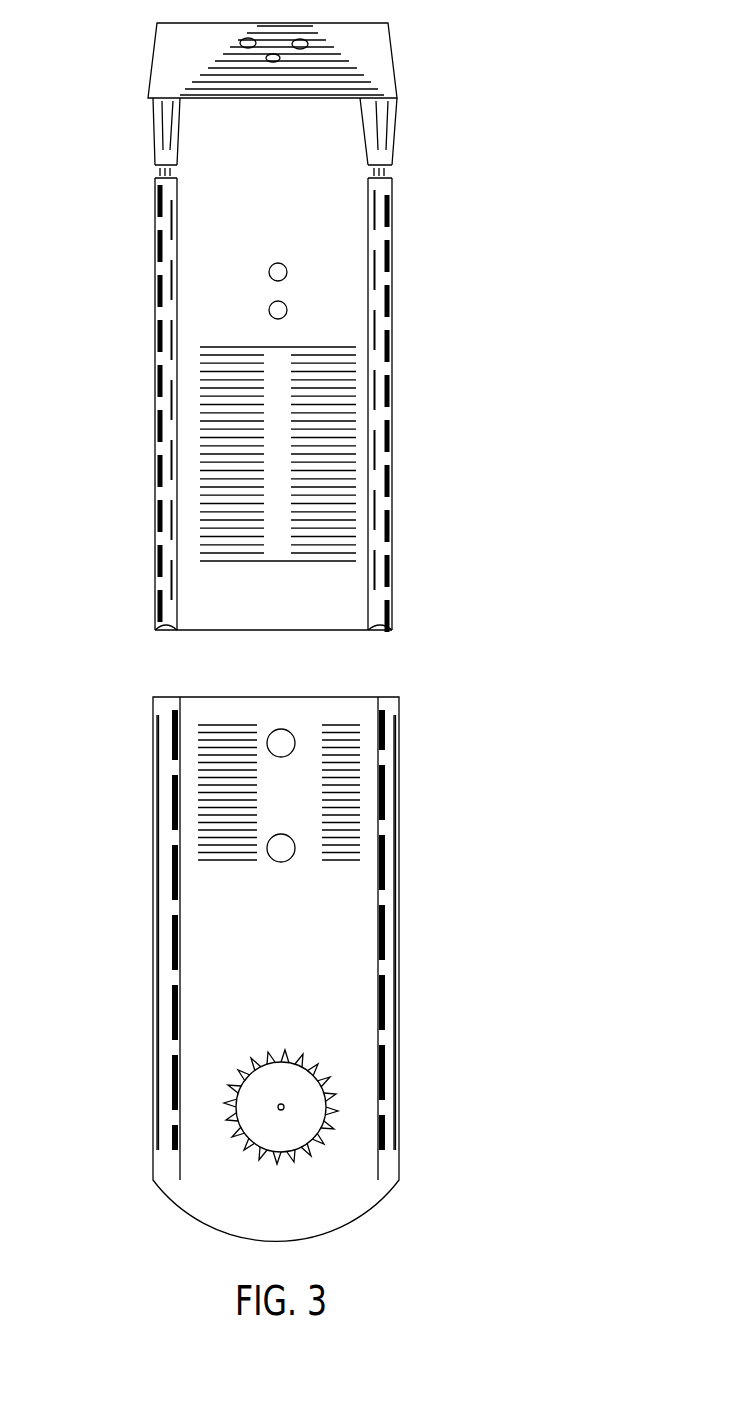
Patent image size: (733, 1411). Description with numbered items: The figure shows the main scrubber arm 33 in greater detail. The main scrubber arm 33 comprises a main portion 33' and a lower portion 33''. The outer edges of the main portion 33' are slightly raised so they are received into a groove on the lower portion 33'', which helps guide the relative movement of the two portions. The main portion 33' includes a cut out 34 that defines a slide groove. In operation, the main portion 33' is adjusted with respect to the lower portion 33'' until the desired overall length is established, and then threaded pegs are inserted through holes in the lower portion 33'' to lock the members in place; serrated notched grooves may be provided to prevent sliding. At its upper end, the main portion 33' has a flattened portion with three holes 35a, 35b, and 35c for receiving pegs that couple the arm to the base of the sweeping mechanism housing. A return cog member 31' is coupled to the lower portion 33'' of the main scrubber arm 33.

The main scrubber arm 33 is at (298, 326).
The main portion 33' is at (326, 405).
The lower portion 33'' is at (378, 969).
The cut out 34 is at (291, 500).
The hole 35a is at (241, 46).
The hole 35b is at (267, 60).
The hole 35c is at (305, 47).
The return cog member 31' is at (412, 1066).